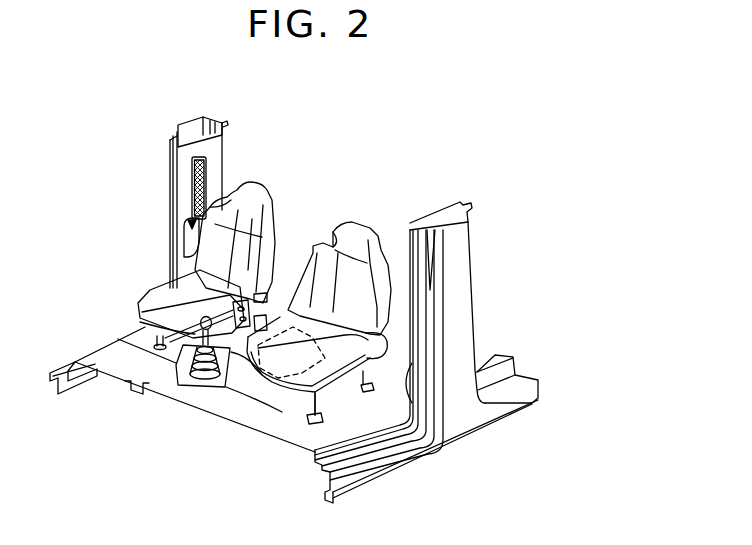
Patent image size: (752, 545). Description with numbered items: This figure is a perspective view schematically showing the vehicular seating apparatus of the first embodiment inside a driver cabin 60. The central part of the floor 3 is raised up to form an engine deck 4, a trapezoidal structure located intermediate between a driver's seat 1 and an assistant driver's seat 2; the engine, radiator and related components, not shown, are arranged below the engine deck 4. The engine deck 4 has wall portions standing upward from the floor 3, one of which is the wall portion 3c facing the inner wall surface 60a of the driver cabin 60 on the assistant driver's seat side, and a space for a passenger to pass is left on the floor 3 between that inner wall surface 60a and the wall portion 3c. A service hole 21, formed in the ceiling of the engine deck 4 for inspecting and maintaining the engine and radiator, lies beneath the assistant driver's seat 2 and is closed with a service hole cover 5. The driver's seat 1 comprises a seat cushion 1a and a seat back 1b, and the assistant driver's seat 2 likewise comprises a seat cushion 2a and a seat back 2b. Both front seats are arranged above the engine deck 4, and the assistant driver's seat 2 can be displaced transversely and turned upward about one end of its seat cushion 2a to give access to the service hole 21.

The driver's seat 1 is at (158, 269).
The seat cushion 1a is at (150, 300).
The seat back 1b is at (252, 202).
The assistant driver's seat 2 is at (387, 231).
The seat cushion 2a is at (342, 367).
The seat back 2b is at (327, 262).
The service hole 21 is at (314, 338).
The floor 3 is at (130, 370).
The wall portion 3c is at (328, 393).
The engine deck 4 is at (232, 397).
The service hole cover 5 is at (273, 387).
The driver cabin 60 is at (158, 190).
The inner wall surface 60a is at (412, 410).